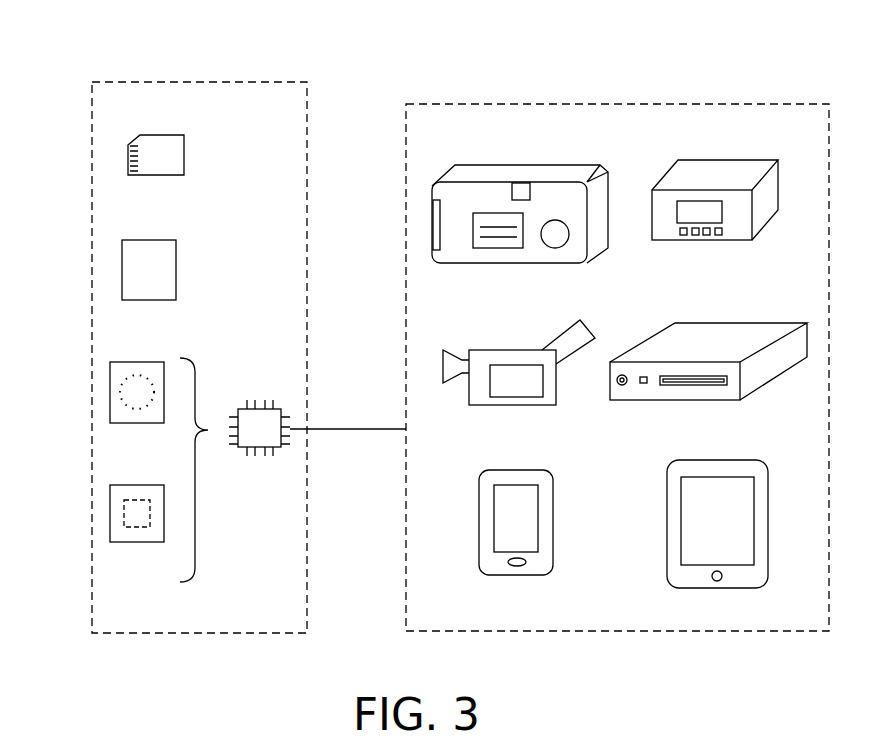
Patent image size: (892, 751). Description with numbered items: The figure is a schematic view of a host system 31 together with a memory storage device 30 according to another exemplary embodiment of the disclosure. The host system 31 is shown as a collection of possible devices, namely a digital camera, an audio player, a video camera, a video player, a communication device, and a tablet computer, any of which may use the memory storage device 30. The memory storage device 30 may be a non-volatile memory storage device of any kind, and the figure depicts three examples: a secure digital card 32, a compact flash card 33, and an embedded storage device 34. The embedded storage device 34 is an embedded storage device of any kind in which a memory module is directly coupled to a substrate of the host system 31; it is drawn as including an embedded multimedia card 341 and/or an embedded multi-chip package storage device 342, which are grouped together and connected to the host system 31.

The memory storage device 30 is at (190, 80).
The host system 31 is at (550, 103).
The secure digital (SD) card 32 is at (128, 160).
The compact flash (CF) card 33 is at (122, 272).
The embedded storage device 34 is at (258, 402).
The embedded multimedia card (eMMC) 341 is at (110, 395).
The embedded multi-chip package (eMCP) storage device 342 is at (110, 515).